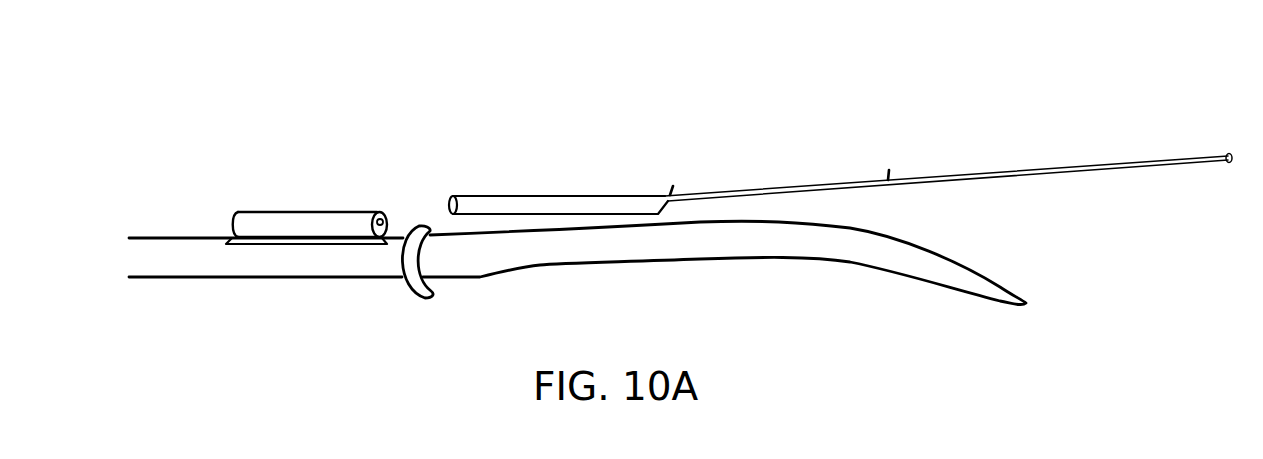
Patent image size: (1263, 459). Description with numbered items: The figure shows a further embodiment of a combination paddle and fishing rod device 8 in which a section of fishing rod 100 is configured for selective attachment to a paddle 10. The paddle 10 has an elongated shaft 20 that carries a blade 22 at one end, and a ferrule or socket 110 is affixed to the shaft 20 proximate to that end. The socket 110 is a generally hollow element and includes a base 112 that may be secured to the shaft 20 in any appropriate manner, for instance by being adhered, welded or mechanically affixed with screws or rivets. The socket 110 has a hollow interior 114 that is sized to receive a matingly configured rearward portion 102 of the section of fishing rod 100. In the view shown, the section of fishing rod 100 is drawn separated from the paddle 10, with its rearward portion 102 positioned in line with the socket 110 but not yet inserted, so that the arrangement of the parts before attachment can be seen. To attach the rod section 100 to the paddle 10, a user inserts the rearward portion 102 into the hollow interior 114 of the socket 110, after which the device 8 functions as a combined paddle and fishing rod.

The combination paddle and fishing rod device 8 is at (715, 128).
The paddle 10 is at (167, 306).
The shaft 20 is at (302, 277).
The curved blade 22 is at (612, 242).
The section of fishing rod 100 is at (834, 183).
The rearward portion 102 is at (520, 196).
The socket 110 is at (253, 223).
The base 112 is at (340, 244).
The hollow interior 114 is at (382, 220).